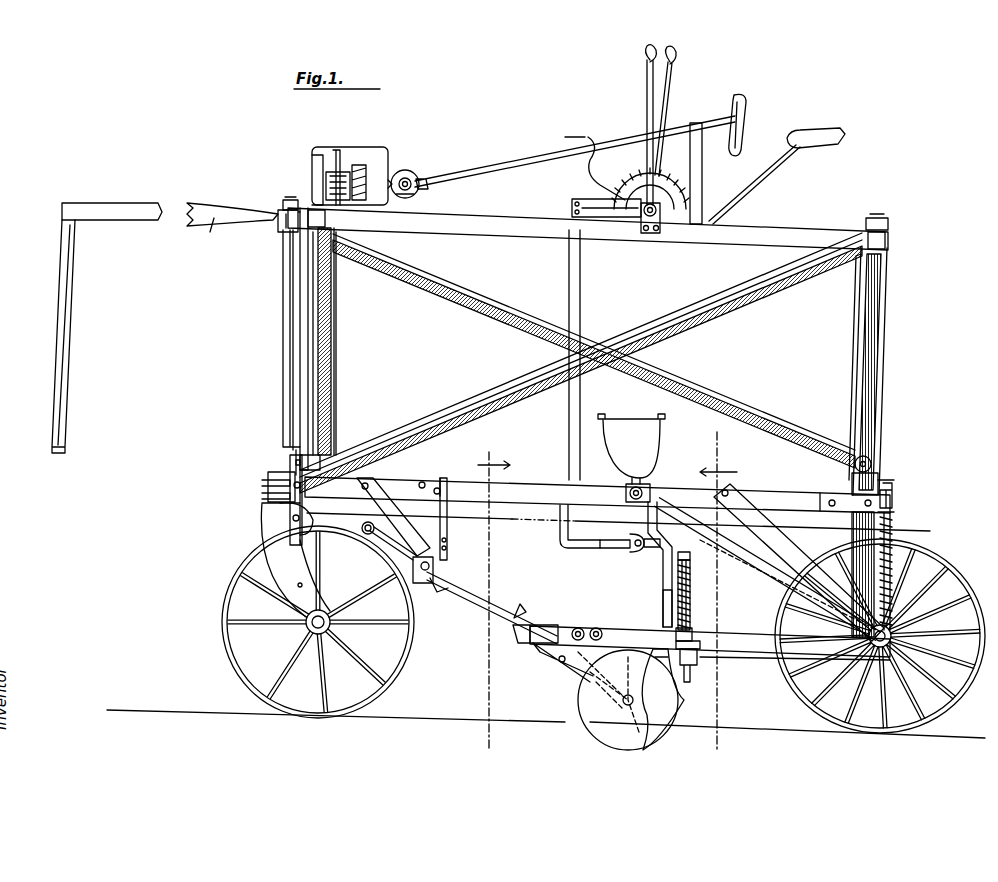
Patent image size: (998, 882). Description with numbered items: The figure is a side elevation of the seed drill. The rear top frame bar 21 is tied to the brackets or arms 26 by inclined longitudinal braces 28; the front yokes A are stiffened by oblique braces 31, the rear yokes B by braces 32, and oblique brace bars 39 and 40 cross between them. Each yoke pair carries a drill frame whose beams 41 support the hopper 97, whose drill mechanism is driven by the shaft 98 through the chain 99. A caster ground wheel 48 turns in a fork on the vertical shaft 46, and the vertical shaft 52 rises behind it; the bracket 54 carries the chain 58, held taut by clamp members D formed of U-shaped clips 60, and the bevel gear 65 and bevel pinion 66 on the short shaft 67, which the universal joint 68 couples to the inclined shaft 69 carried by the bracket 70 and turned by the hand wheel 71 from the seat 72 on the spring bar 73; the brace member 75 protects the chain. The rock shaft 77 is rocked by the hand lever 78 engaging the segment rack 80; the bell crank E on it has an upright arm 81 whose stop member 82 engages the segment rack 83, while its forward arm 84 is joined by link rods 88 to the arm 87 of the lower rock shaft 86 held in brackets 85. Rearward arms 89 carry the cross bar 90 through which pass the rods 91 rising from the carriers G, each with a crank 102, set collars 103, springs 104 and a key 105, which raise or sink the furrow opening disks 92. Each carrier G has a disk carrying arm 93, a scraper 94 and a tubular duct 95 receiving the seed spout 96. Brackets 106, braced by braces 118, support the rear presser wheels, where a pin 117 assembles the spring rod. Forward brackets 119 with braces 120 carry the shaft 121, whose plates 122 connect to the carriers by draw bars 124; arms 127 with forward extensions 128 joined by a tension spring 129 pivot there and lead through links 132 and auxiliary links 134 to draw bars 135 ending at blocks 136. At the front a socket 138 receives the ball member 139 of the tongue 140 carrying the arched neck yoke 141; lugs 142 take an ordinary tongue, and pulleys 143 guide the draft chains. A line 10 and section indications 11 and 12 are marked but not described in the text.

The main frame bar 10 is at (362, 514).
The section line 11 is at (494, 601).
The section line 12 is at (716, 591).
The rear top frame bar 21 is at (890, 239).
The brackets or arms 26 is at (288, 380).
The inclined longitudinal braces 28 is at (375, 430).
The obliquely disposed braces 31 is at (300, 288).
The obliquely disposed braces 32 is at (889, 292).
The brace bars 39 is at (500, 405).
The brace bars 40 is at (668, 378).
The beams or longitudinal frame bars 41 is at (766, 484).
The vertical shaft 46 is at (292, 268).
The ground wheel 48 is at (400, 682).
The vertical shaft 52 is at (332, 320).
The bracket 54 is at (388, 160).
The chain 58 is at (327, 186).
The clips 60 is at (341, 162).
The bevel gear 65 is at (332, 250).
The bevel pinion 66 is at (362, 162).
The short shaft 67 is at (407, 172).
The universal joint 68 is at (410, 192).
The inclined shaft 69 is at (505, 170).
The bracket 70 is at (695, 124).
The hand wheel 71 is at (745, 103).
The seat 72 is at (826, 130).
The spring bar 73 is at (772, 172).
The brace member 75 is at (313, 178).
The rock shaft 77 is at (648, 216).
The hand lever 78 is at (673, 62).
The segment rack 80 is at (662, 178).
The arm 81 is at (648, 80).
The stop member 82 is at (645, 184).
The segment rack 83 is at (616, 180).
The forwardly extending arm 84 is at (575, 200).
The brackets 85 is at (628, 540).
The rock shaft 86 is at (655, 556).
The forwardly extending arm 87 is at (560, 543).
The link rods 88 is at (581, 300).
The rearwardly extending arms 89 is at (661, 580).
The cross bar 90 is at (690, 575).
The rods 91 is at (693, 612).
The furrow opening disks 92 is at (597, 735).
The disk carrying arm 93 is at (585, 680).
The scraper or cleaner 94 is at (655, 730).
The tubular duct 95 is at (648, 625).
The seed duct or spout 96 is at (657, 525).
The seed box or hopper 97 is at (631, 446).
The shaft 98 is at (641, 480).
The chain 99 is at (727, 488).
The crank 102 is at (702, 643).
The set collars 103 is at (690, 632).
The springs 104 is at (690, 598).
The key or pin 105 is at (683, 560).
The arms or brackets 106 is at (874, 572).
The pin or key 117 is at (896, 489).
The braces 118 is at (790, 556).
The brackets 119 is at (447, 535).
The braces 120 is at (383, 500).
The shaft 121 is at (434, 562).
The plates 122 is at (434, 592).
The draw bars 124 is at (488, 602).
The arm 127 is at (487, 617).
The forward extensions 128 is at (380, 545).
The tension spring 129 is at (361, 526).
The links 132 is at (550, 626).
The auxiliary links 134 is at (590, 627).
The draw bars 135 is at (742, 648).
The plates or blocks 136 is at (892, 640).
The socket 138 is at (284, 233).
The ball member 139 is at (280, 213).
The tongue 140 is at (231, 229).
The arched neck yoke 141 is at (68, 312).
The lugs 142 is at (265, 482).
The pulleys 143 is at (283, 520).
The yokes A is at (318, 362).
The yokes B is at (882, 357).
The clamp members D is at (346, 217).
The bell crank E is at (620, 140).
The casings or carriers G is at (659, 684).